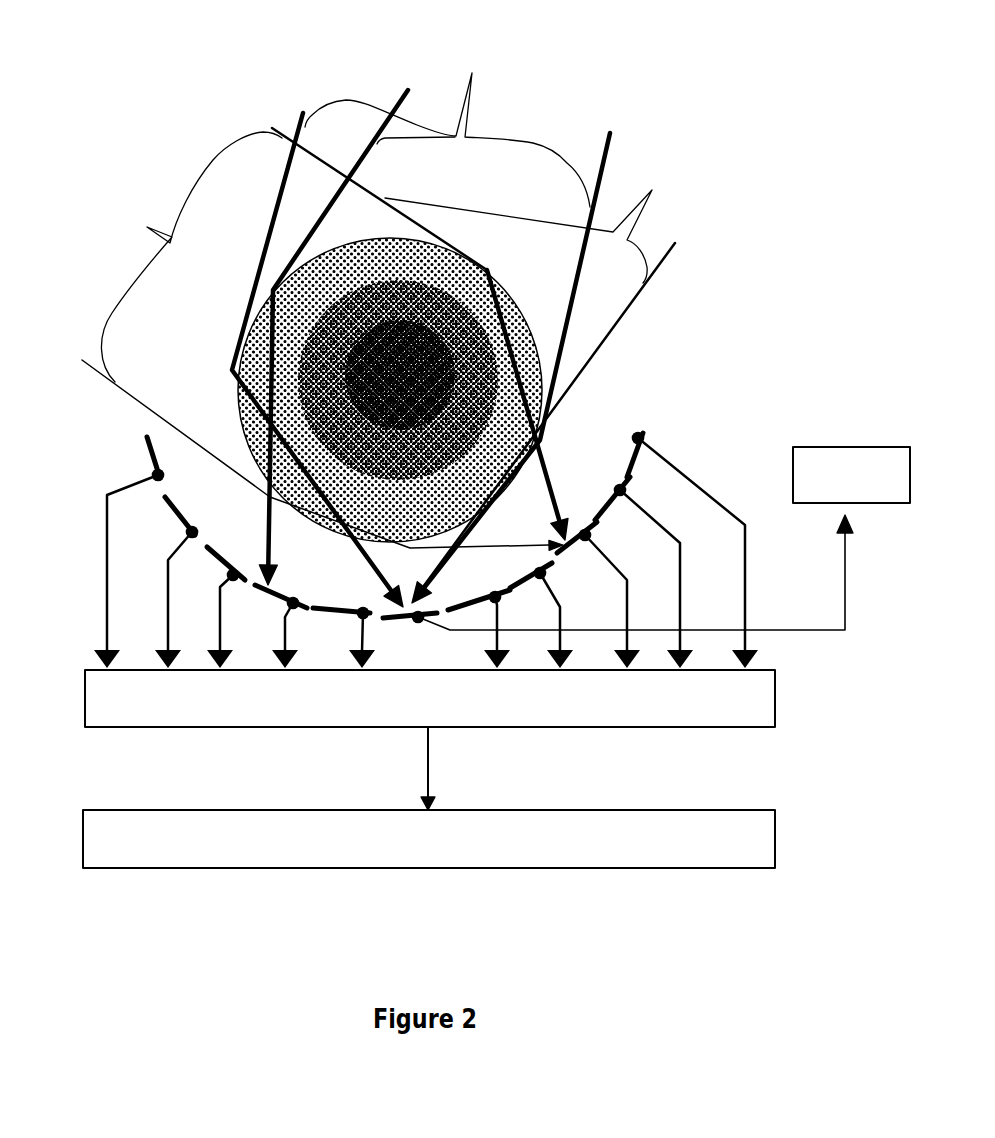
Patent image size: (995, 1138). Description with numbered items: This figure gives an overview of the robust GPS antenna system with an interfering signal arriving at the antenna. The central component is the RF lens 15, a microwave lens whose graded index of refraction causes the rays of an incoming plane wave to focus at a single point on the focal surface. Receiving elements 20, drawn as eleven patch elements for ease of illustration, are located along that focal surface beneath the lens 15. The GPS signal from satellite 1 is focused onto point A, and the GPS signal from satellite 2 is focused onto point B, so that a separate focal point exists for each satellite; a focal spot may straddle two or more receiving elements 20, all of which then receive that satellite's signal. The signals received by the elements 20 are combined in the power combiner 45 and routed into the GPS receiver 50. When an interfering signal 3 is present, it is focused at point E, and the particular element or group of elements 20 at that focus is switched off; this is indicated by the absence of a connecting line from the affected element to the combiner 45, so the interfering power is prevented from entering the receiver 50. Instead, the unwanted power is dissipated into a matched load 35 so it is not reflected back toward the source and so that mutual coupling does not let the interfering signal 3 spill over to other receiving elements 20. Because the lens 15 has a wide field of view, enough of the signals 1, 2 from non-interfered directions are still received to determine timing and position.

The GPS signal from satellite 1 is at (573, 368).
The GPS signal from satellite 2 is at (294, 339).
The interfering signal 3 is at (411, 319).
The RF lens 15 is at (390, 390).
The receiving elements 20 is at (158, 462).
The matched load 35 is at (664, 538).
The power combiner 45 is at (430, 698).
The GPS receiver 50 is at (429, 797).
The focal point of signal from satellite 1 A is at (278, 572).
The focal point of signal from satellite 2 B is at (575, 525).
The focus of interfering signal E is at (406, 600).